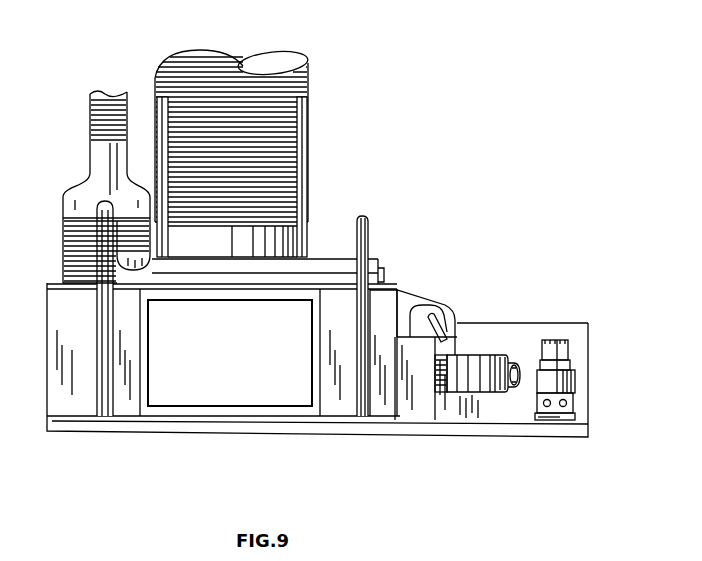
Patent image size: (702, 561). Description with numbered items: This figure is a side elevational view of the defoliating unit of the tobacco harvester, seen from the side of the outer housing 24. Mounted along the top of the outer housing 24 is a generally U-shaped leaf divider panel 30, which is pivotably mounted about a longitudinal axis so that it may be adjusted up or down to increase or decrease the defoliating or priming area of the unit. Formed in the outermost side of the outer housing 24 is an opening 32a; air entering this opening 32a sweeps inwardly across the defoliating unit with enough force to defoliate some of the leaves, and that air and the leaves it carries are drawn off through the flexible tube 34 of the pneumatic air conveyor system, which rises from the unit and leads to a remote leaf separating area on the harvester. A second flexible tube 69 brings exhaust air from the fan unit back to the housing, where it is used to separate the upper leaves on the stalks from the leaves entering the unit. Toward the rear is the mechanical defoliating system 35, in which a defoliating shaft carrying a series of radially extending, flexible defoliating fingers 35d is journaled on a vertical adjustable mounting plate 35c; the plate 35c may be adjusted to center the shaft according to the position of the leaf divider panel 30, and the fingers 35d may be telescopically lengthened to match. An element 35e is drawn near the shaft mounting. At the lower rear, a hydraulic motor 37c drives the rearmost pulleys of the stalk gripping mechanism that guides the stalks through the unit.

The flexible tube 69 is at (98, 127).
The flexible tube 34 is at (292, 87).
The leaf divider panel 30 is at (302, 270).
The mechanical defoliating system 35 is at (435, 280).
The defoliating finger 35d is at (438, 328).
The hydraulic motor 37c is at (557, 385).
The vertical adjustable mounting plate 35c is at (447, 405).
The cylinder 35e is at (490, 380).
The outer housing 24 is at (125, 415).
The opening 32a is at (225, 382).